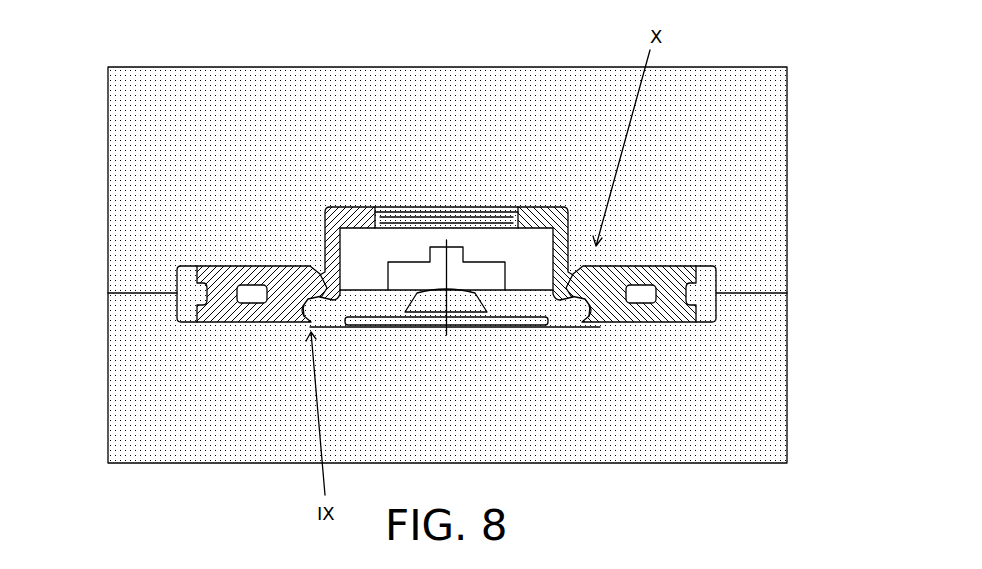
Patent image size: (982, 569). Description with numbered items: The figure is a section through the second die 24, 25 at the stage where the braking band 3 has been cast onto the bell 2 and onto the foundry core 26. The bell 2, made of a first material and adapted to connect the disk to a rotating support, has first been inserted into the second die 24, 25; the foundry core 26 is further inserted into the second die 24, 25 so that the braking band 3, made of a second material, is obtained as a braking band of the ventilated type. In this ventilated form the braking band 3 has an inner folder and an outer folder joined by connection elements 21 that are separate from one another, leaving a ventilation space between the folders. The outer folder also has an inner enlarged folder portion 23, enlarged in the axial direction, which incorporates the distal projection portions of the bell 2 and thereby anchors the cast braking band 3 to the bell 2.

The bell 2 is at (345, 207).
The braking band 3 is at (230, 322).
The connection elements 21 is at (285, 264).
The inner enlarged folder portion 23 is at (313, 268).
The second die 24 is at (258, 428).
The second die 25 is at (766, 162).
The foundry core 26 is at (542, 305).